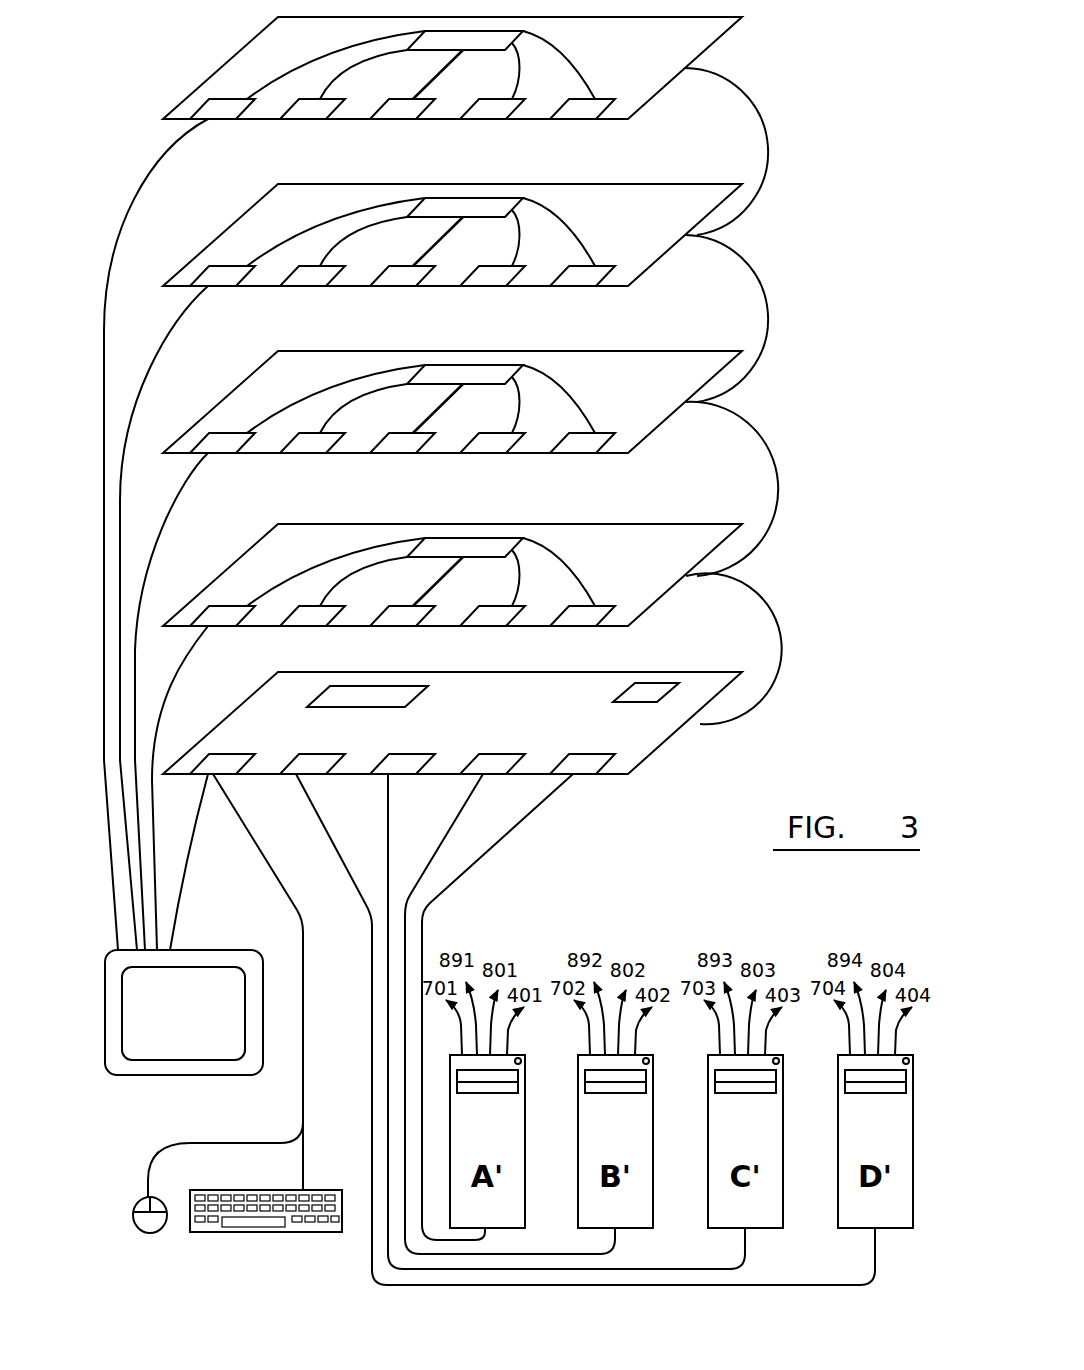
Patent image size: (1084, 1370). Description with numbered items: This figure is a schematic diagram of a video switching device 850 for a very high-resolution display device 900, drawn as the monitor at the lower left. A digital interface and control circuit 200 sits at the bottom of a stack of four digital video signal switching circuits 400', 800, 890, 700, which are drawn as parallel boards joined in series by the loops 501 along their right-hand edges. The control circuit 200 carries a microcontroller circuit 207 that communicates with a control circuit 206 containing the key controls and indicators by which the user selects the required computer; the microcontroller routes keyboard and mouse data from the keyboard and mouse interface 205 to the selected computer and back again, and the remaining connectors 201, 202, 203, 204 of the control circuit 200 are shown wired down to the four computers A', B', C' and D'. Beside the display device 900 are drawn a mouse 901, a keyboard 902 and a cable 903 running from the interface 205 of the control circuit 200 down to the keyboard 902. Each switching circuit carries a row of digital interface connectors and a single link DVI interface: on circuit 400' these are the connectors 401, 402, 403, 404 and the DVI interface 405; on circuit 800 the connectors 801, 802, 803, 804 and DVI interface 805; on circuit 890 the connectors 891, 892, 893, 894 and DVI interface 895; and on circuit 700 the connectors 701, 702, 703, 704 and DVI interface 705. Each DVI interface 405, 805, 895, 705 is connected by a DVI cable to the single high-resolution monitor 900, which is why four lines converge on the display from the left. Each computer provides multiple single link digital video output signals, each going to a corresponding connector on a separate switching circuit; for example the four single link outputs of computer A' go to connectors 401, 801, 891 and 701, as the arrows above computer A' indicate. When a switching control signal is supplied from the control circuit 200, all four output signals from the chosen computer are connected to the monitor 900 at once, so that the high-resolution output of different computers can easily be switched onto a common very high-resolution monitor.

The digital video signal switching circuit 400' is at (440, 89).
The digital video signal switching circuit 800 is at (212, 233).
The digital video signal switching circuit 890 is at (207, 407).
The digital video signal switching circuit 700 is at (216, 575).
The digital interface and control circuit 200 is at (200, 733).
The video switching device 850 is at (797, 238).
The interconnect cable loop 501 is at (775, 148).
The digital interface connector 401 is at (577, 114).
The connector 402 is at (487, 114).
The connector 403 is at (397, 114).
The connector 404 is at (307, 114).
The single link DVI interface 405 is at (217, 114).
The digital interface connector 801 is at (577, 281).
The connector 802 is at (487, 281).
The connector 803 is at (397, 281).
The connector 804 is at (307, 281).
The connector 805 is at (217, 281).
The digital interface connector 891 is at (577, 448).
The connector 892 is at (487, 448).
The connector 893 is at (397, 448).
The connector 894 is at (307, 448).
The single link DVI interface 895 is at (217, 448).
The digital interface connector 701 is at (577, 621).
The connector 702 is at (487, 621).
The connector 703 is at (397, 621).
The connector 704 is at (307, 621).
The single link DVI interface 705 is at (217, 621).
The connector 201 is at (577, 769).
The connector 202 is at (487, 769).
The connector 203 is at (398, 769).
The connector 204 is at (318, 769).
The keyboard and mouse interface 205 is at (230, 769).
The control circuit 206 is at (648, 692).
The microcontroller circuit 207 is at (387, 698).
The very high-resolution display device 900 is at (162, 1047).
The mouse 901 is at (148, 1233).
The keyboard 902 is at (268, 1233).
The cable 903 is at (263, 873).